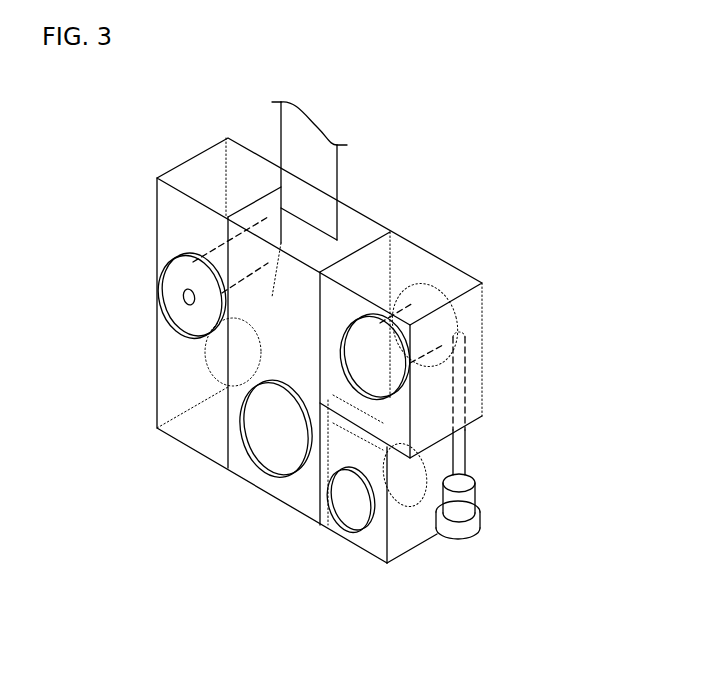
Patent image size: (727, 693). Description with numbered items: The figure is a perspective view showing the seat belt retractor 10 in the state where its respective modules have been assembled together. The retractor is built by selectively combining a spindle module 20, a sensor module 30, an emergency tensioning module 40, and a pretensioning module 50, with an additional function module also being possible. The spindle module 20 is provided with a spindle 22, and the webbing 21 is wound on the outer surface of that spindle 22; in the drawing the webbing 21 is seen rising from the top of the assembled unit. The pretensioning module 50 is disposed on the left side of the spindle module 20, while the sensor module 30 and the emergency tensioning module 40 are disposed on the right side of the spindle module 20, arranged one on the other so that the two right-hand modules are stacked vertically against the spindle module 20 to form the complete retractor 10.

The seat belt retractor 10 is at (506, 198).
The spindle module 20 is at (373, 191).
The webbing 21 is at (281, 130).
The spindle 22 is at (283, 450).
The sensor module 30 is at (353, 563).
The emergency tensioning module 40 is at (495, 343).
The pretensioning module 50 is at (138, 274).